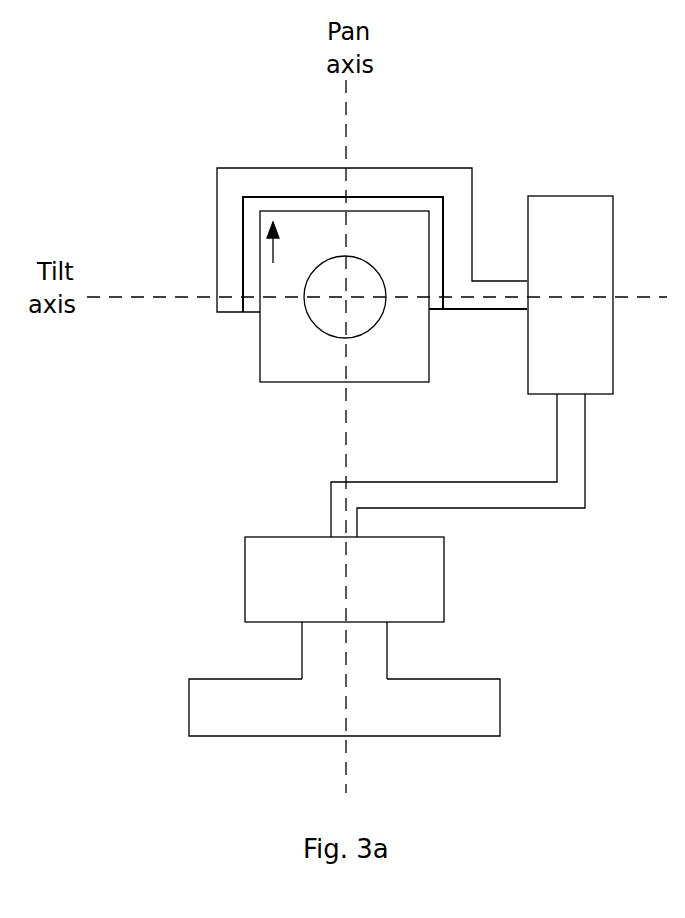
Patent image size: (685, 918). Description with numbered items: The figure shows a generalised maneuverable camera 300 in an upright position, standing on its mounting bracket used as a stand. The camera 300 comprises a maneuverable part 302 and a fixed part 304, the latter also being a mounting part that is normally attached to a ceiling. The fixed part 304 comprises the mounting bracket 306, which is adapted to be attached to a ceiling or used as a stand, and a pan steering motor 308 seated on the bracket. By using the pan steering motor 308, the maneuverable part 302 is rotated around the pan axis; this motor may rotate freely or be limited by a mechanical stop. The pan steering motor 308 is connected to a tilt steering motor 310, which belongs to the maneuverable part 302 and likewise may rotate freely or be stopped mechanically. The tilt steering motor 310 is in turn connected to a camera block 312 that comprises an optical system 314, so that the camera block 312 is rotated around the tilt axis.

The camera 300 is at (388, 140).
The maneuverable part 302 is at (160, 171).
The fixed part 304 is at (162, 541).
The mounting bracket 306 is at (259, 721).
The pan steering motor 308 is at (319, 596).
The tilt steering motor 310 is at (597, 372).
The camera block 312 is at (318, 371).
The optical system 314 is at (375, 318).